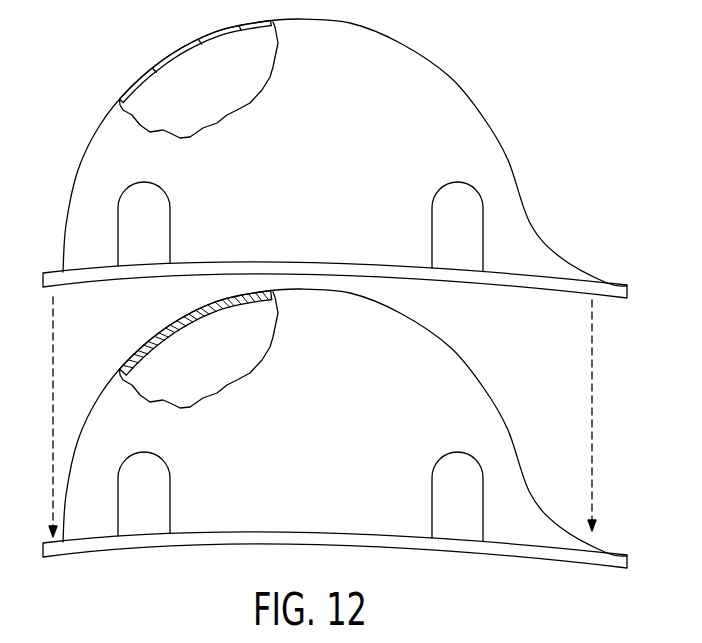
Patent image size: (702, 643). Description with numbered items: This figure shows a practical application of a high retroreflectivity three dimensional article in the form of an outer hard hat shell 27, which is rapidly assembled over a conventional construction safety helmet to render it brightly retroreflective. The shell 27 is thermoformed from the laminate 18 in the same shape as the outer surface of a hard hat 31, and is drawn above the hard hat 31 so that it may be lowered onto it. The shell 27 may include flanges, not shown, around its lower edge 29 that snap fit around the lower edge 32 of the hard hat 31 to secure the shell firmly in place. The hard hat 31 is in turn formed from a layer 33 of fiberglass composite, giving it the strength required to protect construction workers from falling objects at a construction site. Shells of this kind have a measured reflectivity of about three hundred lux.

The laminate 18 is at (158, 63).
The outer hard hat shell 27 is at (301, 179).
The lower edge 29 is at (548, 288).
The hard hat 31 is at (300, 454).
The lower edge 32 is at (550, 558).
The layer 33 is at (158, 335).